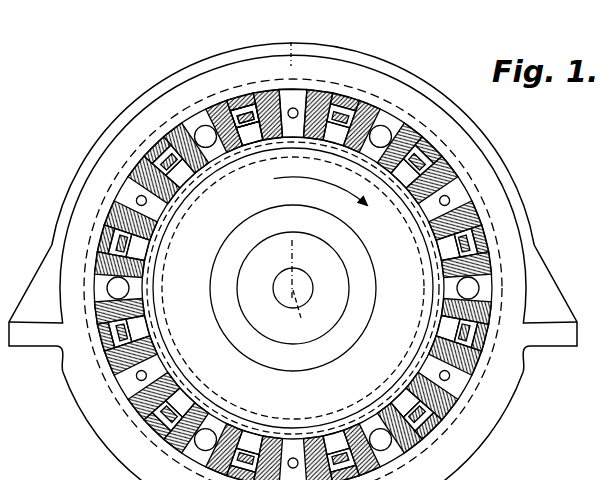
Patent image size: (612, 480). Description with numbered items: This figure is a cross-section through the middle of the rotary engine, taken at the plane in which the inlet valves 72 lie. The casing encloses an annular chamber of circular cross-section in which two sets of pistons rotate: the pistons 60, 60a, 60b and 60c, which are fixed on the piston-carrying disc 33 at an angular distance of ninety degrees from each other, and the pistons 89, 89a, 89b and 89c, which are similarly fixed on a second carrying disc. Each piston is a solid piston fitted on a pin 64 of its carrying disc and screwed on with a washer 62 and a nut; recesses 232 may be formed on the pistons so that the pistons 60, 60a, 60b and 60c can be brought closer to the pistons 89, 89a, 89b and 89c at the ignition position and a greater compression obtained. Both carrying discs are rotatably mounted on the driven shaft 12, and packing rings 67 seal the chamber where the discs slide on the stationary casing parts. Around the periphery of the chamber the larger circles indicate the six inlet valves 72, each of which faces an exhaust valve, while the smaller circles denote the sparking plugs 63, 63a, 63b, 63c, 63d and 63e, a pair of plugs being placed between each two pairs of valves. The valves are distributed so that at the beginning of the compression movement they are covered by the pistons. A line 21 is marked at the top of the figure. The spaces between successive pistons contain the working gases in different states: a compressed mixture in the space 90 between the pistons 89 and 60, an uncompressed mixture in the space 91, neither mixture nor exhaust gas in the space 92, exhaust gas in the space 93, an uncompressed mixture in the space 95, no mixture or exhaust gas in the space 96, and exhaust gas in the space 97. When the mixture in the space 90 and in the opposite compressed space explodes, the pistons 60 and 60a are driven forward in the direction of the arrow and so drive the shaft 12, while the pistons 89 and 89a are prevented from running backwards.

The driven shaft 12 is at (307, 296).
The center line 21 is at (284, 46).
The piston-carrying disc 33 is at (288, 287).
The piston 60 is at (350, 146).
The piston 60a is at (254, 425).
The piston 60b is at (446, 318).
The piston 60c is at (142, 268).
The washer 62 is at (237, 100).
The sparking plug 63 is at (295, 108).
The pin 63a is at (296, 458).
The pin 63b is at (444, 196).
The pin 63c is at (442, 381).
The pin 63d is at (147, 377).
The pin 63e is at (146, 199).
The pin 64 is at (254, 135).
The packing ring 67 is at (262, 93).
The inlet valve 72 is at (203, 141).
The piston 89 is at (234, 149).
The piston 89a is at (350, 430).
The piston 89b is at (434, 230).
The piston 89c is at (157, 342).
The space 90 is at (292, 131).
The space 91 is at (418, 169).
The space 92 is at (480, 293).
The space 93 is at (413, 413).
The space 95 is at (168, 409).
The space 96 is at (101, 295).
The space 97 is at (160, 167).
The recess 232 is at (410, 368).